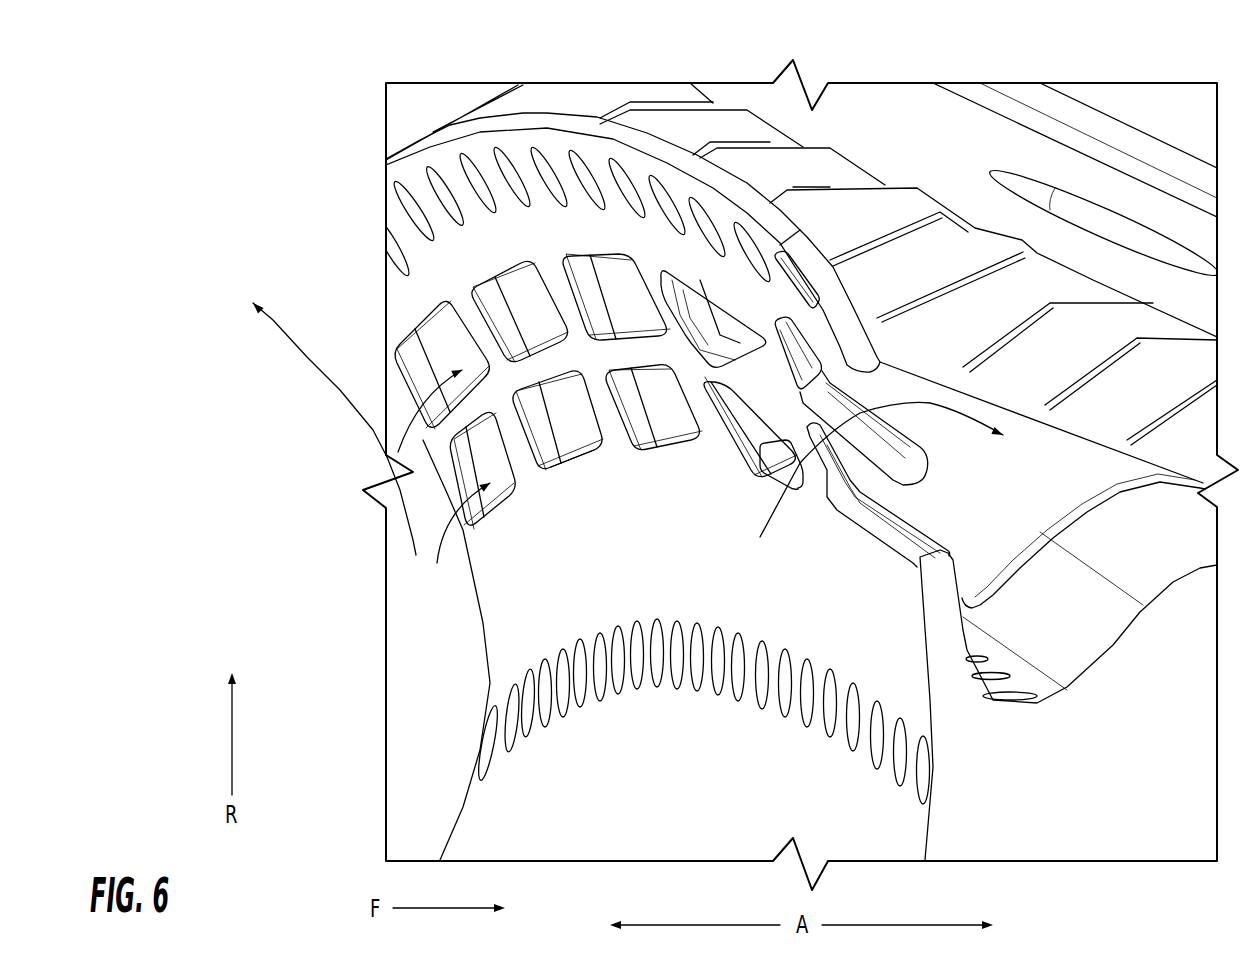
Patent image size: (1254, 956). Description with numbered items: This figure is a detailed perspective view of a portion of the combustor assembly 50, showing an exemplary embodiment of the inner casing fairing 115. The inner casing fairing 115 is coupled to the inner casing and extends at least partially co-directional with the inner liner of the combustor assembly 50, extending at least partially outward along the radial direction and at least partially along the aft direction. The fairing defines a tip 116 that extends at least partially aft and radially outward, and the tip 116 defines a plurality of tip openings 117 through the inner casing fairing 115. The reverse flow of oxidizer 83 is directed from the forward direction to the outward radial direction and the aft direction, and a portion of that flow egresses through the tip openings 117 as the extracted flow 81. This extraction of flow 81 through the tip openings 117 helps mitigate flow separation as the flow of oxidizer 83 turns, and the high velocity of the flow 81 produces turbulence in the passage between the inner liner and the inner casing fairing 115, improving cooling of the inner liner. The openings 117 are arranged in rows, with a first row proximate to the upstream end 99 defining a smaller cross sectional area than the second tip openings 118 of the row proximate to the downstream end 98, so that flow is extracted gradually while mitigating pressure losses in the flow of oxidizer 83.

The combustor assembly 50 is at (745, 50).
The flow extracted through the tip openings 81 is at (420, 412).
The reverse flow of oxidizer 83 is at (352, 396).
The downstream end 98 is at (432, 124).
The upstream end 99 is at (432, 849).
The inner casing fairing 115 is at (510, 622).
The tip 116 is at (403, 174).
The tip openings 117 is at (641, 175).
The second tip openings 118 is at (573, 465).